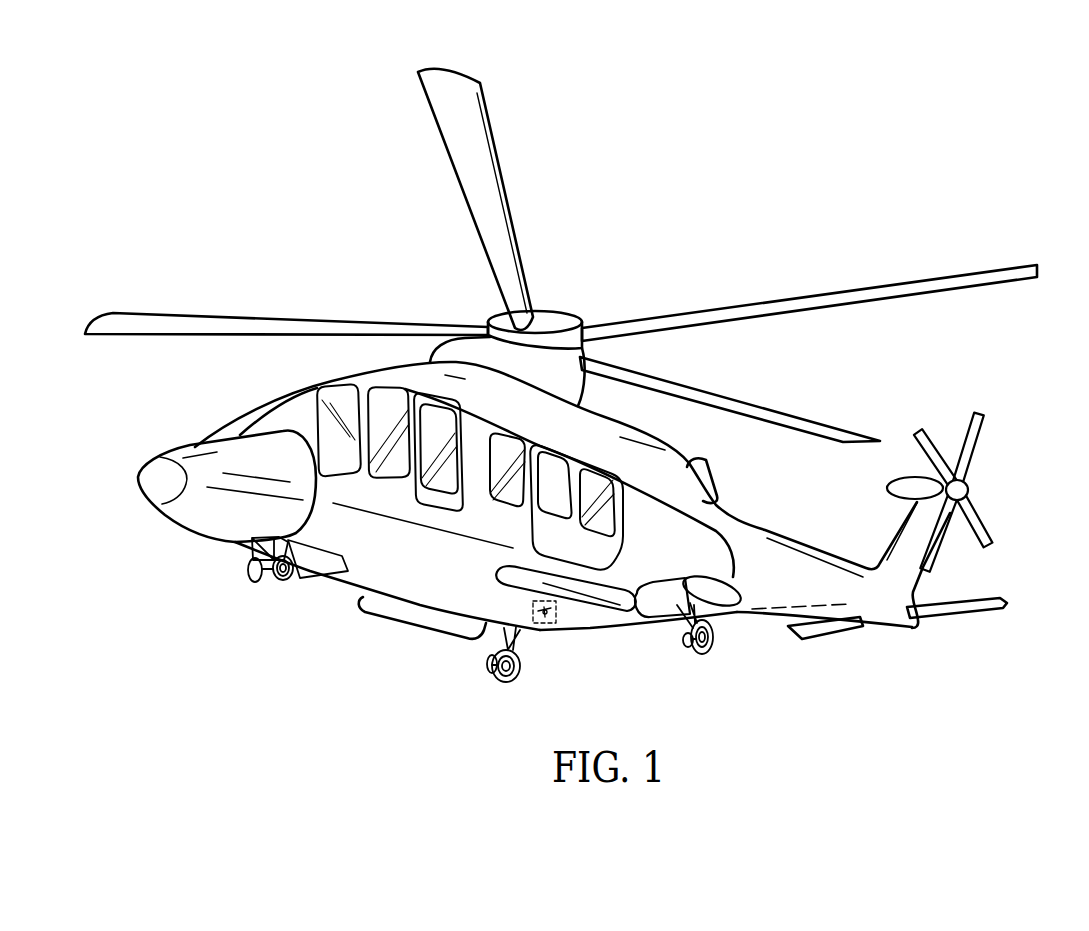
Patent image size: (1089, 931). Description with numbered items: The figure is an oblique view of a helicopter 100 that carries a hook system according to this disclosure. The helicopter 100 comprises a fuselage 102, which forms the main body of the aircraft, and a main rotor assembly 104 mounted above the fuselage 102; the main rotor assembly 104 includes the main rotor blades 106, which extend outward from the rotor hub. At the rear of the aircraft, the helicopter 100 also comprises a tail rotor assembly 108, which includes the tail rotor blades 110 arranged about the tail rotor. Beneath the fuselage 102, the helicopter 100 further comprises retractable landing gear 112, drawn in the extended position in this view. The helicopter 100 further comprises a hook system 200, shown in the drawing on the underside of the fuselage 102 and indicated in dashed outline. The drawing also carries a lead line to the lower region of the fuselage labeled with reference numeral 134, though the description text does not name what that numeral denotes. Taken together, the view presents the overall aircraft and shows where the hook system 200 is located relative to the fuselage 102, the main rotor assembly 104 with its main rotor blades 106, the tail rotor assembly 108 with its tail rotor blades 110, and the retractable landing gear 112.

The helicopter 100 is at (280, 98).
The fuselage 102 is at (397, 493).
The main rotor assembly 104 is at (576, 296).
The main rotor blades 106 is at (507, 200).
The tail rotor assembly 108 is at (992, 494).
The tail rotor blades 110 is at (937, 440).
The retractable landing gear 112 is at (260, 584).
The underside of fuselage 134 is at (598, 621).
The hook system 200 is at (533, 607).